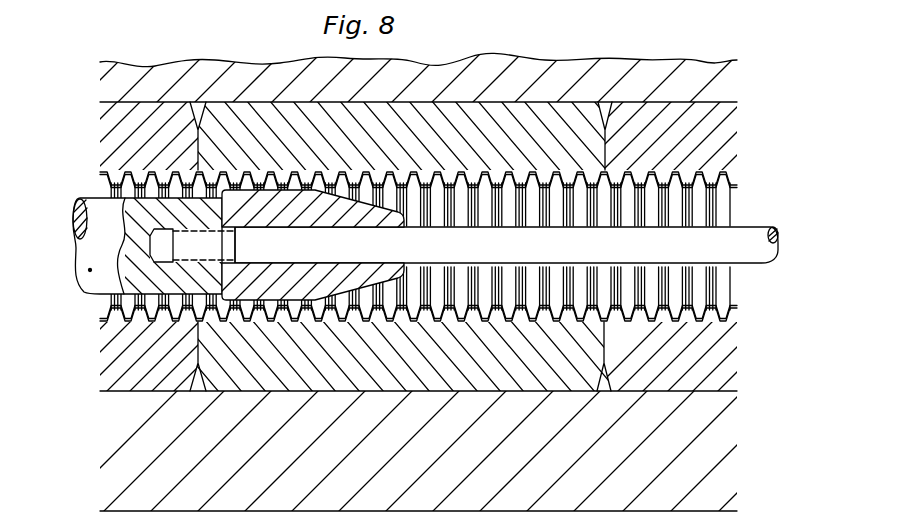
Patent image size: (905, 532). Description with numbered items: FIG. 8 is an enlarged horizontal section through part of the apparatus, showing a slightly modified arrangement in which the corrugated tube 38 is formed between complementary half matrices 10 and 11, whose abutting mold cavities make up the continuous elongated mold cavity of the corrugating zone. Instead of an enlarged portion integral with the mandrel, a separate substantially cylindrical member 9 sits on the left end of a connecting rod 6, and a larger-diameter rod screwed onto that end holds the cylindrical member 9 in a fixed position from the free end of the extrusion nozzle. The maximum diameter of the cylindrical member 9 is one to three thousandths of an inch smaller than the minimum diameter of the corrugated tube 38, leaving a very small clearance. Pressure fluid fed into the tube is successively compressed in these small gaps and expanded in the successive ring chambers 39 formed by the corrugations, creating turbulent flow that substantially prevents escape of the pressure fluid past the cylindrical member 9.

The connecting rod 6 is at (793, 334).
The cylindrical member 9 is at (289, 278).
The half matrix 10 is at (450, 115).
The half matrix 11 is at (473, 357).
The corrugated tube 38 is at (148, 184).
The ring chambers 39 is at (245, 184).